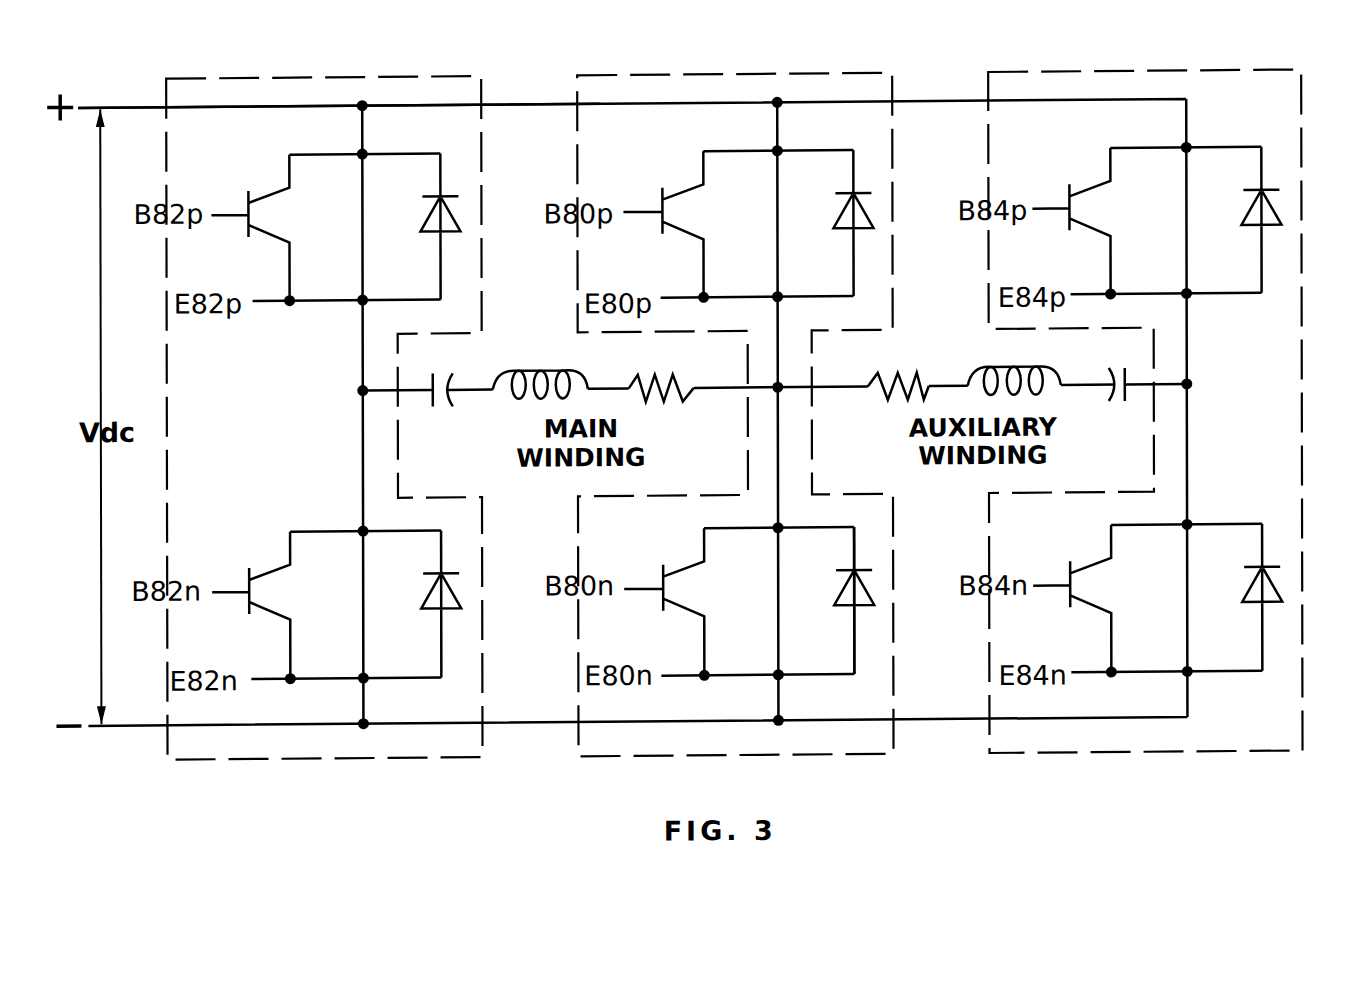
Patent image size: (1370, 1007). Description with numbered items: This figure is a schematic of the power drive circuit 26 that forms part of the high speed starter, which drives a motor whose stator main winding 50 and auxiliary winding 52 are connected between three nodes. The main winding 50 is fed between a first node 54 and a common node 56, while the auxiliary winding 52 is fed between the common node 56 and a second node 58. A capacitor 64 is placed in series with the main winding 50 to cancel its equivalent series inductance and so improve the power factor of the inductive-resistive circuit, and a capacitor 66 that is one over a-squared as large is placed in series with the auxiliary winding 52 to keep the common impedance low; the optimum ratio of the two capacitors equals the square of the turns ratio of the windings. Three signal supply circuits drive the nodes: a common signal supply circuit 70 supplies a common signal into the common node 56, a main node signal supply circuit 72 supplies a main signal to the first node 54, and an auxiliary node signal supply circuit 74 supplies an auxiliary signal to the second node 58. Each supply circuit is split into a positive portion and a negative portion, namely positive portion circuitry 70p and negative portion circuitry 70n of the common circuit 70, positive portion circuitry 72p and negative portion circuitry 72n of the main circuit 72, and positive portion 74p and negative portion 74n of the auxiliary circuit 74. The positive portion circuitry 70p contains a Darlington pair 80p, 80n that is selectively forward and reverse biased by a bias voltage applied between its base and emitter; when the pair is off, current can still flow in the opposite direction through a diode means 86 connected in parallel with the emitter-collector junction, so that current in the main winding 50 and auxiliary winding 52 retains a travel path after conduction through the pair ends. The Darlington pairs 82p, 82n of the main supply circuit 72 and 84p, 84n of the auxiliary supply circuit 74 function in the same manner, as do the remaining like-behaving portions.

The power drive circuit 26 is at (812, 63).
The stator main winding 50 is at (541, 375).
The auxiliary winding 52 is at (996, 375).
The first node 54 is at (358, 399).
The common node 56 is at (779, 390).
The second node 58 is at (1190, 397).
The capacitor 64 is at (453, 384).
The capacitor 66 is at (1107, 386).
The common signal supply circuit 70 is at (677, 78).
The positive portion circuitry 70p is at (859, 158).
The negative portion circuitry 70n is at (859, 537).
The main node signal supply circuit 72 is at (352, 78).
The positive portion circuitry 72p is at (448, 155).
The negative portion circuitry 72n is at (357, 529).
The auxiliary node signal supply circuit 74 is at (1074, 78).
The positive portion 74p is at (1267, 160).
The negative portion 74n is at (1193, 530).
The Darlington pair transistor 80p is at (684, 195).
The Darlington pair transistor 80n is at (692, 564).
The Darlington pair transistor 82p is at (270, 189).
The Darlington pair transistor 82n is at (282, 566).
The Darlington pair transistor 84p is at (1098, 193).
The Darlington pair transistor 84n is at (1097, 572).
The diode means 86 is at (837, 587).